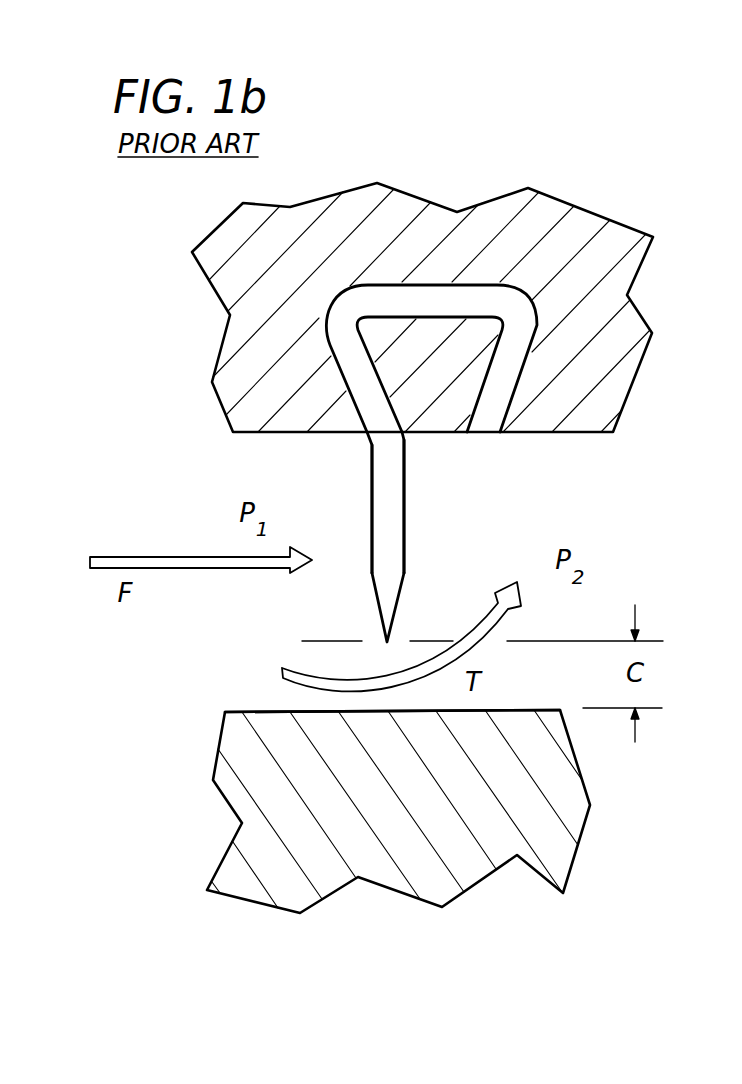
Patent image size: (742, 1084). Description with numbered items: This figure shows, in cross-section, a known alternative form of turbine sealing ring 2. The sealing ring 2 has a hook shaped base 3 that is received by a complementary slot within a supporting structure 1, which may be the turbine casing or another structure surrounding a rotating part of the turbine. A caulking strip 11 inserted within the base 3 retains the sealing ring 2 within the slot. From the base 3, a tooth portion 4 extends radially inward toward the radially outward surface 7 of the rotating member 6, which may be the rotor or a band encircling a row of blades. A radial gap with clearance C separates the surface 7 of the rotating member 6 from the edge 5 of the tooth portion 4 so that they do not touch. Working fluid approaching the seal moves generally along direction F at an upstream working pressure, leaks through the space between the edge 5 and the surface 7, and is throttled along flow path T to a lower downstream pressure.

The supporting structure 1 is at (600, 255).
The sealing ring 2 is at (463, 510).
The hook shaped base 3 is at (433, 300).
The tooth portion 4 is at (383, 533).
The edge 5 is at (385, 640).
The rotating member 6 is at (253, 780).
The radially outward surface 7 is at (245, 713).
The caulking strip 11 is at (430, 418).